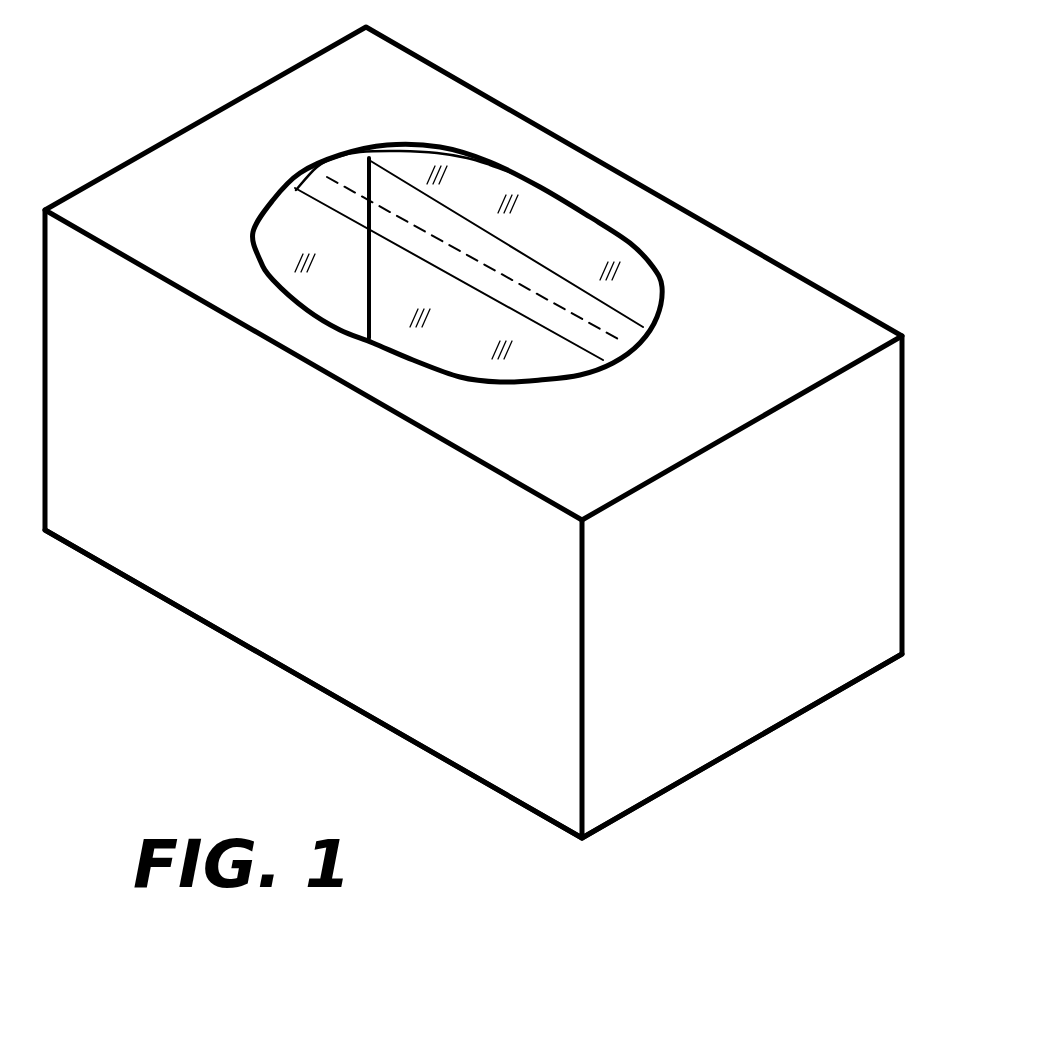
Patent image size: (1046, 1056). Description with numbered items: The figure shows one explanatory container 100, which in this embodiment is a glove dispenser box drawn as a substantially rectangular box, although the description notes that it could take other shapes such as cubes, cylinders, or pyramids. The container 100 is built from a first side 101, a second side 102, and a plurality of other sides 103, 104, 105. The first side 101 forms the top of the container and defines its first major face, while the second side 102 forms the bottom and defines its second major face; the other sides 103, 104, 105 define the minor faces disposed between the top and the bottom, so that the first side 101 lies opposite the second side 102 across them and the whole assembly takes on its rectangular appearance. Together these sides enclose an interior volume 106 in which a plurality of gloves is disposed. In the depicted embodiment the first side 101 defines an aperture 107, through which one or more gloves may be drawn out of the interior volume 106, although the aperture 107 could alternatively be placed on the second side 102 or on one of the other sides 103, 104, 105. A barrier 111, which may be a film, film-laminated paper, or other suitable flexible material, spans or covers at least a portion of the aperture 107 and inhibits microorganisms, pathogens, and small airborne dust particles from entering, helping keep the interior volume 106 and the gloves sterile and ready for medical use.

The container 100 is at (504, 427).
The first side 101 is at (473, 268).
The second side 102 is at (757, 741).
The other side 103 is at (873, 462).
The other side 104 is at (173, 510).
The other side 105 is at (297, 203).
The interior volume 106 is at (333, 300).
The aperture 107 is at (553, 223).
The barrier 111 is at (413, 167).